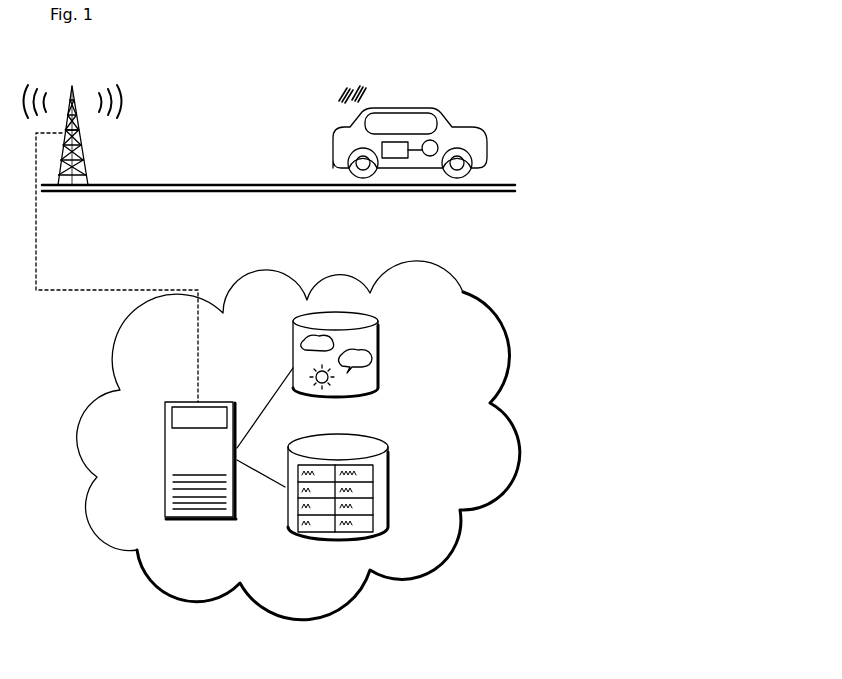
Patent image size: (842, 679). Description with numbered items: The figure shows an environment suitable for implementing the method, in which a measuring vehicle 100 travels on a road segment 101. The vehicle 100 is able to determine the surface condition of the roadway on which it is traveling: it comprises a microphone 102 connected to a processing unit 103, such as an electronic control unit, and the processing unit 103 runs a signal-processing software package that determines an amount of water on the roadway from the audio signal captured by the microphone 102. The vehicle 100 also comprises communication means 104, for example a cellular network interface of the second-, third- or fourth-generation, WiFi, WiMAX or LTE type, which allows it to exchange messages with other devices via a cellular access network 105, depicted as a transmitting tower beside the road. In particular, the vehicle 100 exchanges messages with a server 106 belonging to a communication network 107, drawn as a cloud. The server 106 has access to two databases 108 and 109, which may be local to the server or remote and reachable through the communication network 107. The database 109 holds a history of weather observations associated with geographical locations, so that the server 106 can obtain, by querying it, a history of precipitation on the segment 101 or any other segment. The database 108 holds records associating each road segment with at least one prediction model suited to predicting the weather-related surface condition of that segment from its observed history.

The measuring vehicle 100 is at (330, 153).
The road segment 101 is at (300, 193).
The microphone 102 is at (442, 140).
The processing unit 103 is at (363, 141).
The communication means 104 is at (352, 122).
The cellular access network 105 is at (88, 177).
The server 106 is at (163, 482).
The communication network 107 is at (463, 290).
The database 108 is at (383, 447).
The database 109 is at (377, 370).